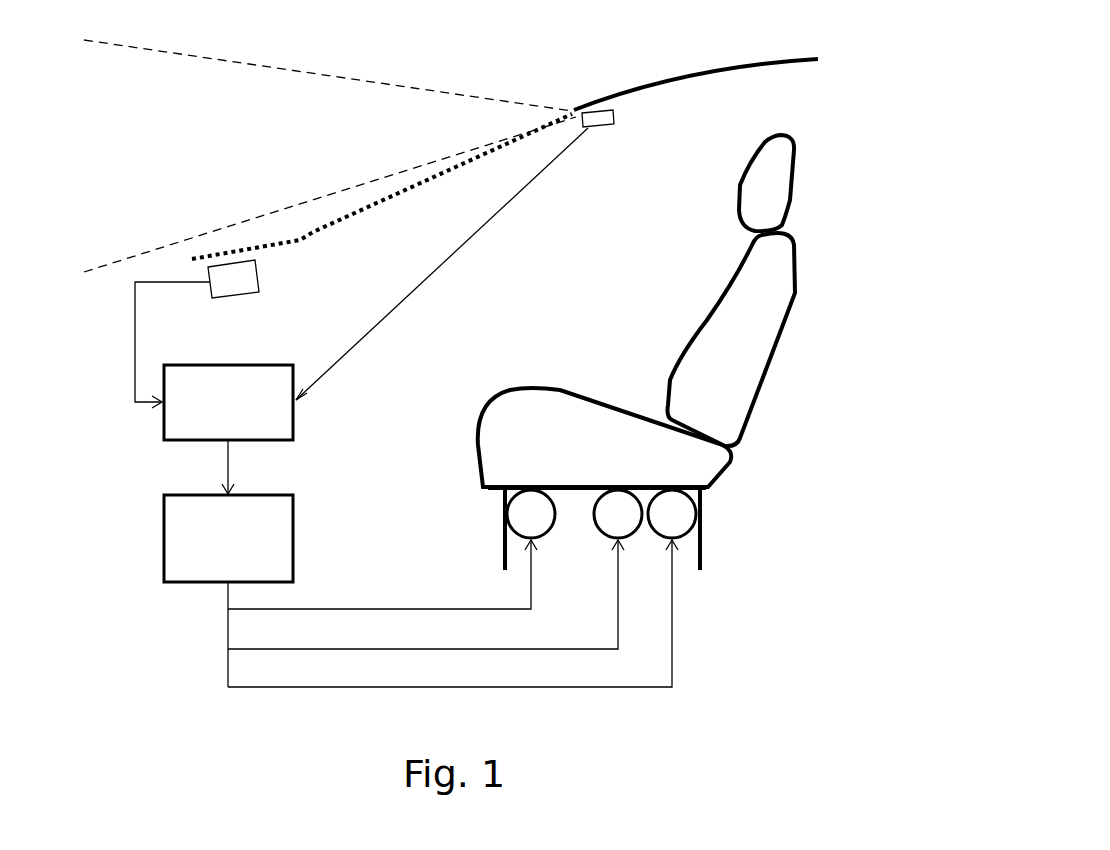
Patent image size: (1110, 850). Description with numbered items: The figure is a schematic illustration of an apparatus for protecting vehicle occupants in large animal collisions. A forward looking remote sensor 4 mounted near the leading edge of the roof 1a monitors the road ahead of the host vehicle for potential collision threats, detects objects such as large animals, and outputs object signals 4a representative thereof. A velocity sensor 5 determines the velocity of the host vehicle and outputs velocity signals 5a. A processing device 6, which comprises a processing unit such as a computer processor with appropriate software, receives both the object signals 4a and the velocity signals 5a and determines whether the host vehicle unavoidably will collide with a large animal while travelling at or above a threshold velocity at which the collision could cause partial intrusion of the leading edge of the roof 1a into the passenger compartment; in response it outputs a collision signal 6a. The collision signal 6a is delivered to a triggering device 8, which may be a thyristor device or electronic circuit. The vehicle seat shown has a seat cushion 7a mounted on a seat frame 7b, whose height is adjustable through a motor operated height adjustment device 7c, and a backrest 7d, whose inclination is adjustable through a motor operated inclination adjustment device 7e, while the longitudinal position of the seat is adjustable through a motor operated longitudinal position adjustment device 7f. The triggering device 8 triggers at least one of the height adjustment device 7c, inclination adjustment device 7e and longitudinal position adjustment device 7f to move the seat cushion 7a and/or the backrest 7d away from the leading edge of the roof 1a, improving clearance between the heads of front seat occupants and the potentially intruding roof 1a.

The roof 1a is at (591, 103).
The forward looking remote sensor 4 is at (597, 120).
The object signals 4a is at (442, 264).
The velocity sensor 5 is at (228, 280).
The velocity signals 5a is at (151, 345).
The processing device 6 is at (235, 416).
The collision signal 6a is at (241, 467).
The triggering device 8 is at (235, 553).
The seat cushion 7a is at (589, 462).
The seat frame 7b is at (701, 523).
The motor operated height adjustment device 7c is at (544, 526).
The backrest 7d is at (737, 403).
The motor operated inclination adjustment device 7e is at (632, 526).
The motor operated longitudinal position adjustment device 7f is at (684, 526).